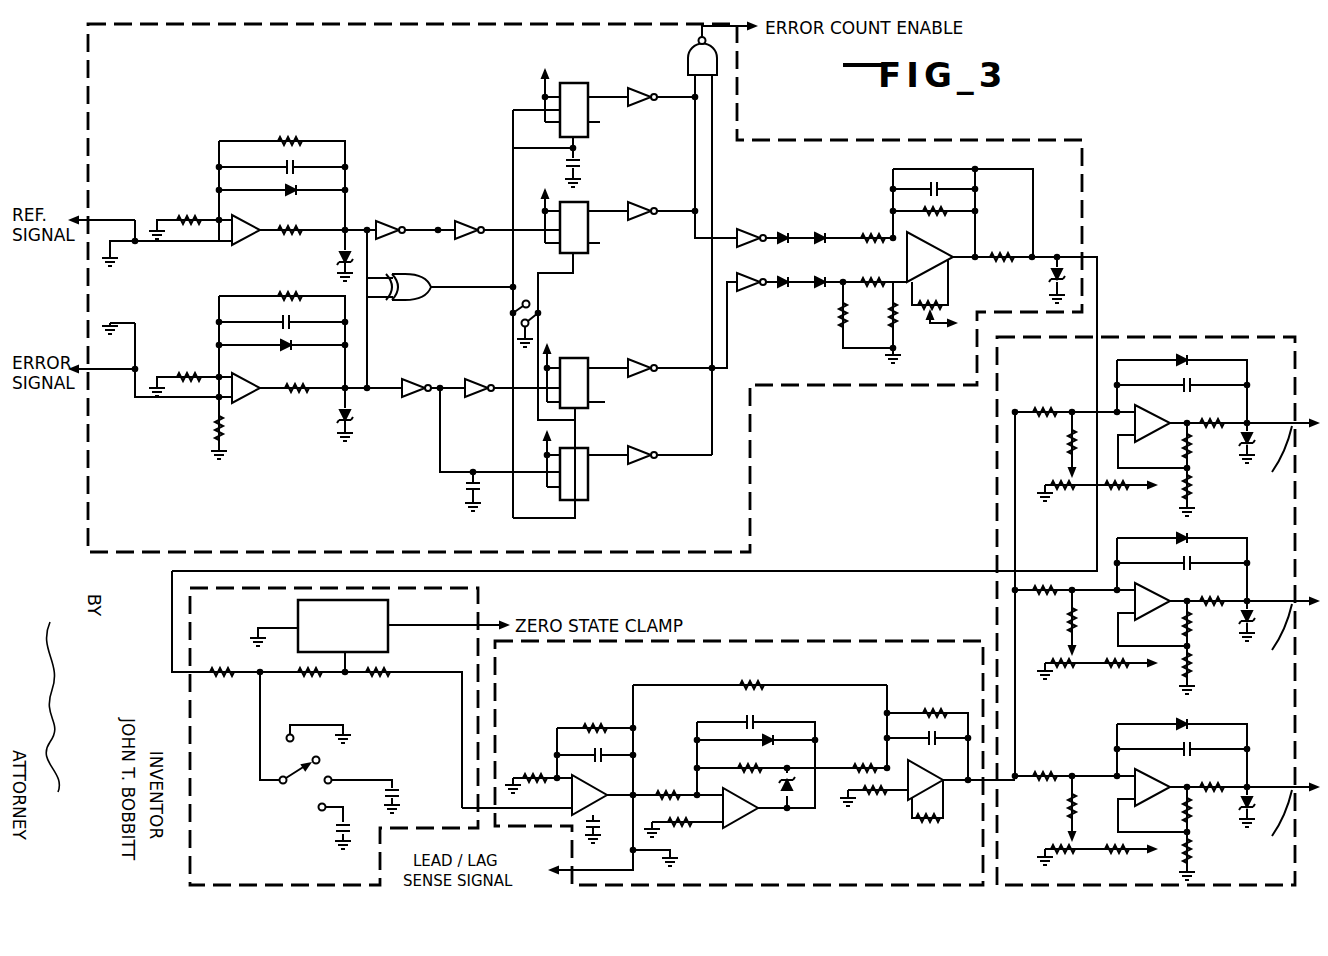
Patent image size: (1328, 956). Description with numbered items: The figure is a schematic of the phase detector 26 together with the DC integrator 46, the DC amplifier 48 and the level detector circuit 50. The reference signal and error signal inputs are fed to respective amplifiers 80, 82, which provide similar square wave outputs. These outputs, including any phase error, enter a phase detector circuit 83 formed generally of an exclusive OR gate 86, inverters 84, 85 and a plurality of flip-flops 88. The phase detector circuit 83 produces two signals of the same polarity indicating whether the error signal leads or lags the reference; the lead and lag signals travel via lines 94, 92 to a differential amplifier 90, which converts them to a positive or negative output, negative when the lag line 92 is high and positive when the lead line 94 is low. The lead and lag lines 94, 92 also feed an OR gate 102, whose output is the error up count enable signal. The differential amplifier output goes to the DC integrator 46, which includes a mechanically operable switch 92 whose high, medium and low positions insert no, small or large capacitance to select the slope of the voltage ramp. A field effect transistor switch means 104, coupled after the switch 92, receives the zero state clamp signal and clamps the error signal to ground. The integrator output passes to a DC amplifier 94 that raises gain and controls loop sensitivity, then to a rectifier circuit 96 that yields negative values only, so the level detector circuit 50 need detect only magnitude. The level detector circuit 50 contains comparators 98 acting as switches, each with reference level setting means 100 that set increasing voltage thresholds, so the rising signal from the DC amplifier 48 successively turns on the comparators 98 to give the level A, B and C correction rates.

The phase detector 26 is at (1085, 208).
The DC integrator 46 is at (478, 597).
The DC amplifier 48 is at (888, 645).
The level detector circuit 50 is at (997, 464).
The amplifier 80 is at (244, 221).
The amplifier 82 is at (244, 379).
The phase detector circuit 83 is at (492, 397).
The inverters 84 is at (425, 214).
The inverters 85 is at (657, 408).
The exclusive OR gate 86 is at (424, 270).
The flip-flops 88 is at (580, 85).
The differential amplifier 90 is at (910, 318).
The lag line / switch 92 is at (729, 234).
The lead line / DC amplifier 94 is at (727, 328).
The rectifier circuit 96 is at (870, 828).
The comparators 98 is at (1200, 434).
The reference level setting means 100 is at (1071, 498).
The OR gate 102 is at (688, 55).
The field effect transistor switch means 104 is at (288, 608).